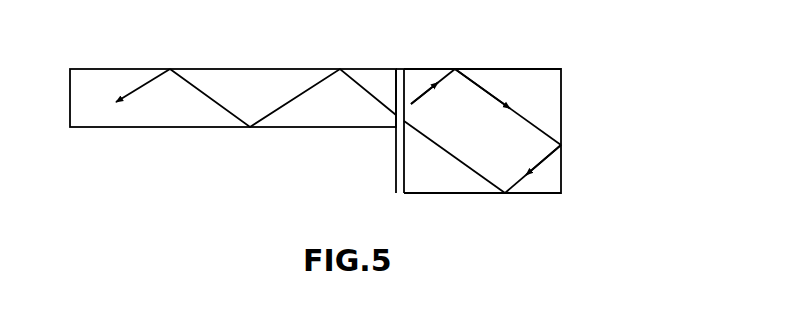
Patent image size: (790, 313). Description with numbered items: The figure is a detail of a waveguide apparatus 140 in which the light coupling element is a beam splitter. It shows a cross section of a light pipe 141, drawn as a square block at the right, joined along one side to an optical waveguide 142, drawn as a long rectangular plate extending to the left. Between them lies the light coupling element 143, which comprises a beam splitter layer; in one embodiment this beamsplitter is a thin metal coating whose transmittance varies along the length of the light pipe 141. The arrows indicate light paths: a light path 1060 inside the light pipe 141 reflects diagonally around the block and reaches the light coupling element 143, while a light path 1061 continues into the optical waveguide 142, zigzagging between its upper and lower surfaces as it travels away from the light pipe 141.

The optical assembly 140 is at (387, 116).
The light pipe 141 is at (422, 69).
The optical waveguide 142 is at (87, 69).
The light coupling element 143 is at (397, 165).
The light path in second block 1060 is at (540, 130).
The light path in first plate 1061 is at (227, 112).